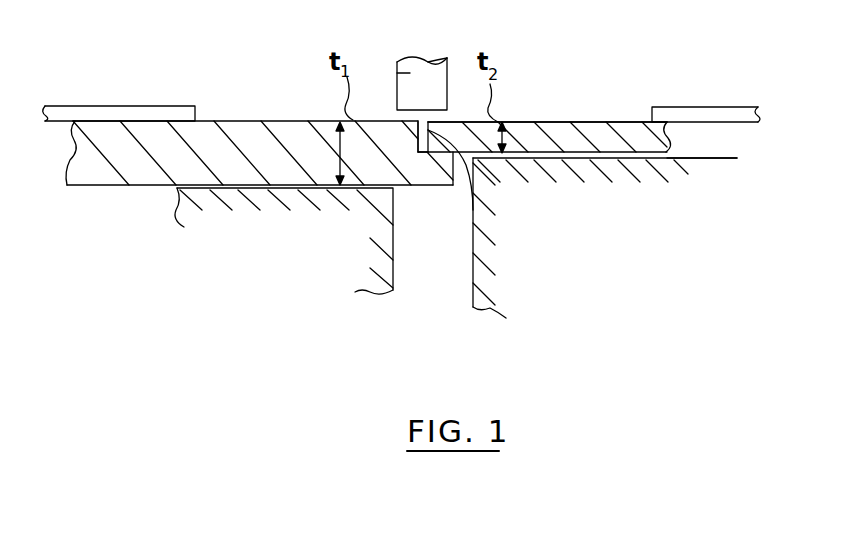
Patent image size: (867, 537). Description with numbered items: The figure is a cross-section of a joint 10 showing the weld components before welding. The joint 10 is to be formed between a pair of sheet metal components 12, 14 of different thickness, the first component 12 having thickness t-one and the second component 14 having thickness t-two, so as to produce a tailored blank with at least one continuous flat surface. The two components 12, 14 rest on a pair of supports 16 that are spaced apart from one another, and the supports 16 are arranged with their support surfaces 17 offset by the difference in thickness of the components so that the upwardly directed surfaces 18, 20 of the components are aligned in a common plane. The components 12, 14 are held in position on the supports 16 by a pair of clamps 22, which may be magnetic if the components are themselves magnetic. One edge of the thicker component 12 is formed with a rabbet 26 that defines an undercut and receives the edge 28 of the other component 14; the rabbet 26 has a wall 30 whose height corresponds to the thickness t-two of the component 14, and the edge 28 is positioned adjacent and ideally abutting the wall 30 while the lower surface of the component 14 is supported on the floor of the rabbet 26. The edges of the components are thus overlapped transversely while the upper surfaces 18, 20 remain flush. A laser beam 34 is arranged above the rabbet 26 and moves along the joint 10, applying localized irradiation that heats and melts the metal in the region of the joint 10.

The joint 10 is at (223, 93).
The sheet metal component 12 is at (142, 182).
The sheet metal component 14 is at (618, 122).
The supports 16 is at (456, 238).
The support surfaces 17 is at (712, 158).
The upwardly directed surface 18 is at (287, 118).
The upwardly directed surface 20 is at (550, 122).
The clamps 22 is at (98, 115).
The rabbet 26 is at (427, 157).
The edge 28 is at (475, 217).
The wall 30 is at (418, 140).
The laser beam 34 is at (397, 73).